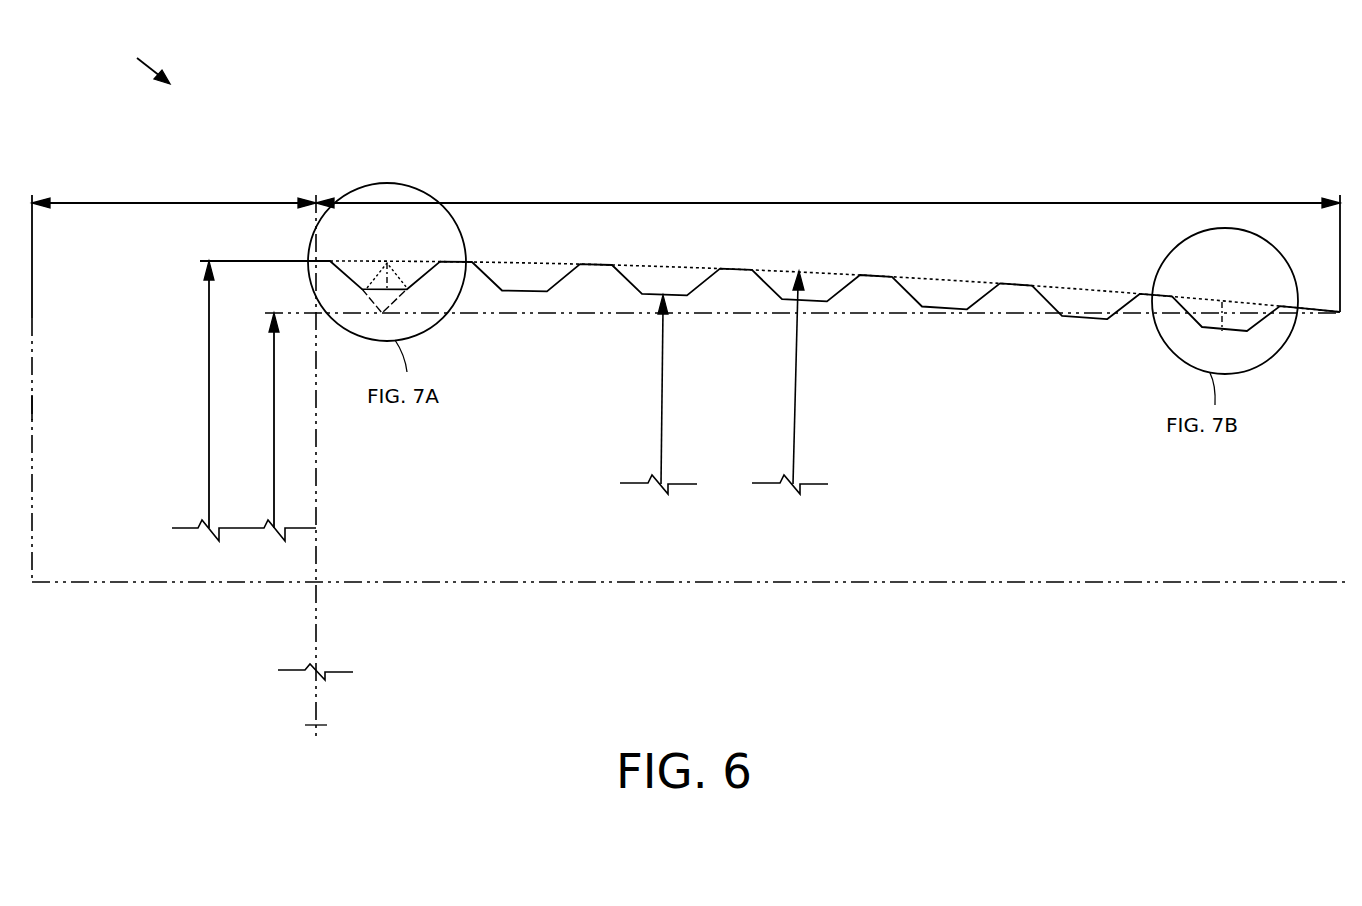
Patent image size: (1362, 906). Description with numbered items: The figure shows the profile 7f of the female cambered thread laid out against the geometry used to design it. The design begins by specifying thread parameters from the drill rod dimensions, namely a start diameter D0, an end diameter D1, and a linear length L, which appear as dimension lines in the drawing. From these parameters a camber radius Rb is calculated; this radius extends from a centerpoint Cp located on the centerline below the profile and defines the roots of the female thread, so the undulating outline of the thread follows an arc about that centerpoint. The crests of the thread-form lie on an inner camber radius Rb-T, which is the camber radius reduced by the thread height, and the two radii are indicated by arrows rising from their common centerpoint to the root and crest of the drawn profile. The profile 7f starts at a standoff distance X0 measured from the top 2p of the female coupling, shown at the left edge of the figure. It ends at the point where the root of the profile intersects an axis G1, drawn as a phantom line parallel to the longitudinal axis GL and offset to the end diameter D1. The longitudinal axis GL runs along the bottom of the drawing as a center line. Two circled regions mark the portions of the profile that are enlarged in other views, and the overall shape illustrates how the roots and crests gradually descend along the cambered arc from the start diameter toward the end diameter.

The profile of the female cambered thread 7f is at (142, 59).
The standoff distance X0 is at (152, 204).
The length L is at (880, 204).
The start diameter D0 is at (208, 383).
The end diameter D1 is at (274, 435).
The top 2p is at (33, 415).
The inner camber radius Rb-T is at (663, 395).
The camber radius Rb is at (797, 393).
The axis G1 is at (1025, 314).
The longitudinal axis GL is at (985, 583).
The centerpoint Cp is at (310, 723).